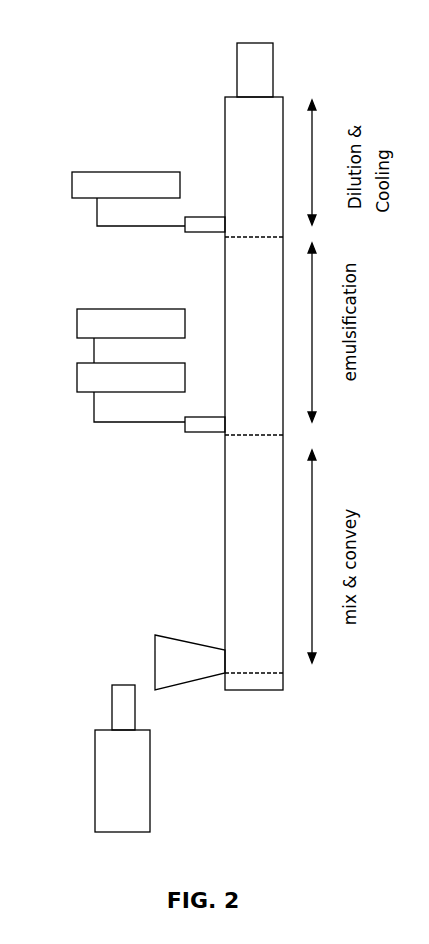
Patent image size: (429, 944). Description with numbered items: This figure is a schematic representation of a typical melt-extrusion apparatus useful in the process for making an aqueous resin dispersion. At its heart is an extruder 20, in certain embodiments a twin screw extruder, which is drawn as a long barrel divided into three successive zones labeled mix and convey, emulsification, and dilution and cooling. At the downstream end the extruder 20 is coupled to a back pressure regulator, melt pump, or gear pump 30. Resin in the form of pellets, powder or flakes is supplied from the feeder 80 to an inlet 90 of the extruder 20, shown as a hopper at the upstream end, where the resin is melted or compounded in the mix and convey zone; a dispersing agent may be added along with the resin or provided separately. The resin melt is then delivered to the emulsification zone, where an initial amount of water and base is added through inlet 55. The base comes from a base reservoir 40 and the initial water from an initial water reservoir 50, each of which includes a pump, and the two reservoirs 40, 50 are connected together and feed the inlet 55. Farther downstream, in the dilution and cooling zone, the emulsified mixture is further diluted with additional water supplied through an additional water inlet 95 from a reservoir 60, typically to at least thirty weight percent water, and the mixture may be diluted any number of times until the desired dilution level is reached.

The extruder 20 is at (221, 548).
The back pressure regulator, melt pump, or gear pump 30 is at (255, 70).
The base reservoir 40 is at (131, 392).
The initial water reservoir 50 is at (131, 336).
The inlet 55 is at (203, 432).
The reservoir 60 is at (128, 199).
The feeder 80 is at (122, 758).
The inlet 90 is at (190, 662).
The additional water inlet 95 is at (205, 215).